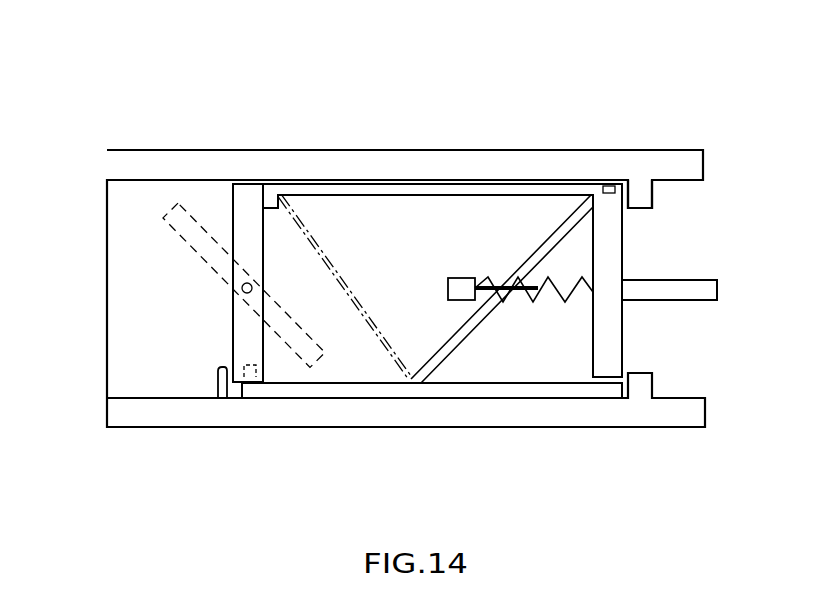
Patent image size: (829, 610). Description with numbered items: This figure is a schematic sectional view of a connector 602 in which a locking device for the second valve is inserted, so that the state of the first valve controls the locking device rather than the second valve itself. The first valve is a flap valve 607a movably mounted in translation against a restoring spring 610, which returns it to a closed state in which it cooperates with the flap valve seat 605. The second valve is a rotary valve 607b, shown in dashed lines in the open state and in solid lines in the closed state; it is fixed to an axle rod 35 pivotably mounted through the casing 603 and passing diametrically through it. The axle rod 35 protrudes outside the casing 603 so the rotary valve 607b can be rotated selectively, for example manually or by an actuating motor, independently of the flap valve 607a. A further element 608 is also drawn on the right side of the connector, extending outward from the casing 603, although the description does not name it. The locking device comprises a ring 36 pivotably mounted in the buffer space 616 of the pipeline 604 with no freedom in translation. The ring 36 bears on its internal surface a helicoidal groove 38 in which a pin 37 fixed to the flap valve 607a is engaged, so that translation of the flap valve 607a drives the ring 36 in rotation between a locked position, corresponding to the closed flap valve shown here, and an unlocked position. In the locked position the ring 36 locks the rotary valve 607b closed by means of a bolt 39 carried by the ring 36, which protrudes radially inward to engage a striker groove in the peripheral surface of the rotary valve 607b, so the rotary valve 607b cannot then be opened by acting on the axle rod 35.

The connector 602 is at (398, 263).
The casing 603 is at (425, 150).
The pipeline 604 is at (136, 240).
The flap valve seat 605 is at (651, 200).
The flap valve 607a is at (610, 353).
The rotary valve 607b is at (200, 223).
The actuator rod 608 is at (688, 280).
The restoring spring 610 is at (548, 303).
The buffer space 616 is at (381, 231).
The axle rod 35 is at (242, 288).
The ring 36 is at (497, 190).
The pin 37 is at (604, 184).
The helicoidal groove 38 is at (460, 347).
The bolt 39 is at (276, 383).